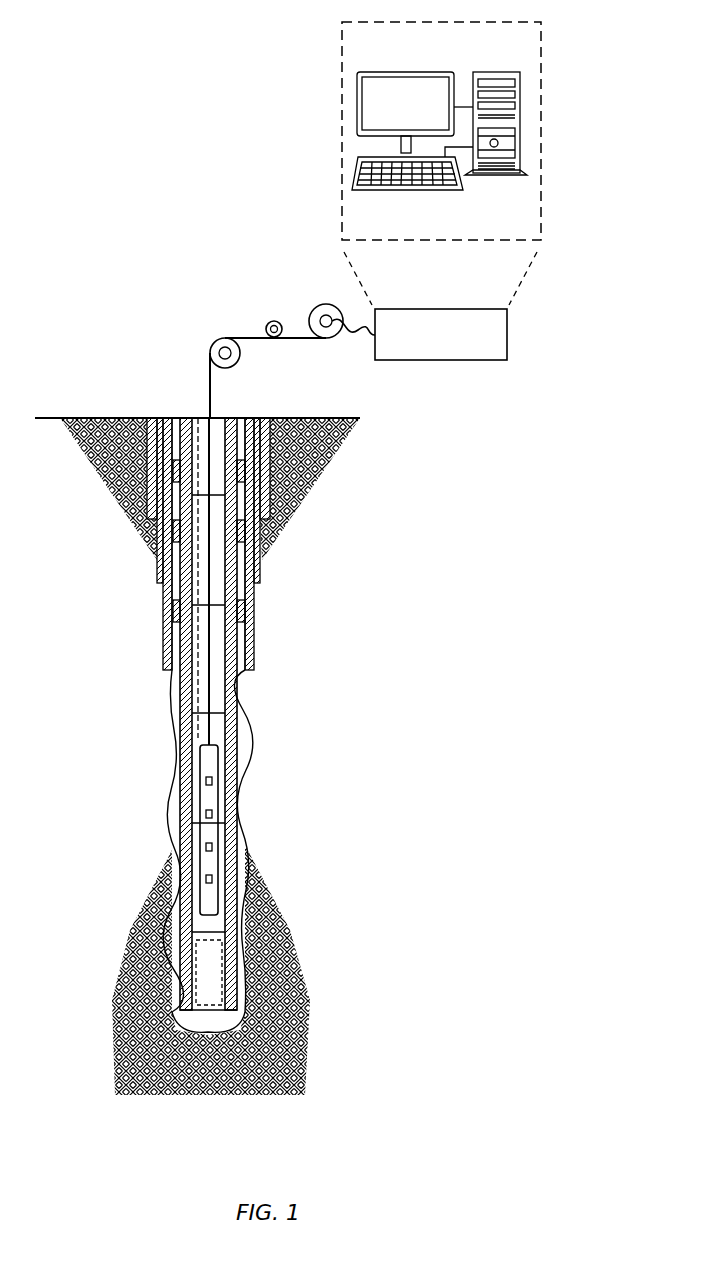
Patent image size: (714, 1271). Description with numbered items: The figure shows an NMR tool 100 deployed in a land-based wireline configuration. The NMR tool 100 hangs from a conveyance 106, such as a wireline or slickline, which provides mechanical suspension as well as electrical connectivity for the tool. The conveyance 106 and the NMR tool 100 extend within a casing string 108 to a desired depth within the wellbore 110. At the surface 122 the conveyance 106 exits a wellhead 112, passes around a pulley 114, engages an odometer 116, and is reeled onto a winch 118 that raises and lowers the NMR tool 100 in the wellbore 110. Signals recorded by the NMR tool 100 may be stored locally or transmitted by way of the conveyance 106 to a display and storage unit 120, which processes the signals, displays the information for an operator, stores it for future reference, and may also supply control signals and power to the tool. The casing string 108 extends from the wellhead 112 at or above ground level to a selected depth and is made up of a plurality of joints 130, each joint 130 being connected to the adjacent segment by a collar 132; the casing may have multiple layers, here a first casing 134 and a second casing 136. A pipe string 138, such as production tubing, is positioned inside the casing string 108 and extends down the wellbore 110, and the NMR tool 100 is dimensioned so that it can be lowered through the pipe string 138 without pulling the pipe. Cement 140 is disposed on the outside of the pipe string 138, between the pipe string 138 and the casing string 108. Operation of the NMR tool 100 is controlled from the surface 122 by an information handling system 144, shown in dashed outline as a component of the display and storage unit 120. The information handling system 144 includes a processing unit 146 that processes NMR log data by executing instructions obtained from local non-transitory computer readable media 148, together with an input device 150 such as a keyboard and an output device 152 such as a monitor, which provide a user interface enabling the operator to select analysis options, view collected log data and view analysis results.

The NMR tool 100 is at (147, 128).
The conveyance 106 is at (213, 397).
The casing string 108 is at (139, 573).
The wellbore 110 is at (245, 654).
The wellhead 112 is at (199, 416).
The pulley 114 is at (211, 343).
The odometer 116 is at (267, 322).
The winch 118 is at (312, 308).
The display and storage unit 120 is at (510, 345).
The surface 122 is at (102, 418).
The joint 130 is at (163, 596).
The collar 132 is at (163, 632).
The first casing 134 is at (251, 600).
The second casing 136 is at (243, 562).
The pipe string 138 is at (178, 955).
The cement 140 is at (247, 742).
The information handling system 144 is at (541, 83).
The processing unit 146 is at (497, 176).
The non-transitory computer readable media 148 is at (497, 72).
The input device 150 is at (412, 191).
The output device 152 is at (407, 72).